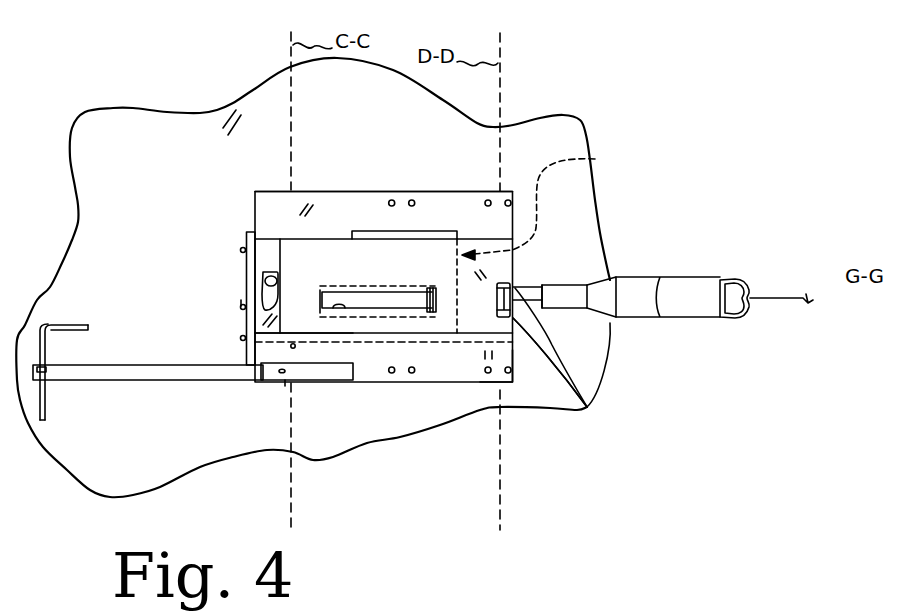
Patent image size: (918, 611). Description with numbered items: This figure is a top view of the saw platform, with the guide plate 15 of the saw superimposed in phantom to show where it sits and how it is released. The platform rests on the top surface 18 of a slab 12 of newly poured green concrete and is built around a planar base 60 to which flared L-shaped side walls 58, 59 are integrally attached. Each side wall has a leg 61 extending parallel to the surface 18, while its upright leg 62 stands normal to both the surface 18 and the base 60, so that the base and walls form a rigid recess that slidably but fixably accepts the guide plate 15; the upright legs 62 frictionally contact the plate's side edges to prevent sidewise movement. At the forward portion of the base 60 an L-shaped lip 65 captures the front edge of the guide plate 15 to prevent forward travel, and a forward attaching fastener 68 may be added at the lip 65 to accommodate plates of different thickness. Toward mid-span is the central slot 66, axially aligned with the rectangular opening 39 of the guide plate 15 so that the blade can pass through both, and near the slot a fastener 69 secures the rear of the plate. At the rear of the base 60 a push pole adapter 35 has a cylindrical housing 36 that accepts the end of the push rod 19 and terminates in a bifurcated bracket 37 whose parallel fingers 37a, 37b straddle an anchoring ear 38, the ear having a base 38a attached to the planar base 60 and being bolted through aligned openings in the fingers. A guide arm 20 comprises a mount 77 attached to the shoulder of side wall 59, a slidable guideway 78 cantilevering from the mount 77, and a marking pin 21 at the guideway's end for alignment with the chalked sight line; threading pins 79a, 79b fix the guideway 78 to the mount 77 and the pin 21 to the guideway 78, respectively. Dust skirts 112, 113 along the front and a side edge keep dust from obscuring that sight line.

The slab of green concrete 12 is at (113, 108).
The guide plate 15 is at (541, 203).
The top surface 18 is at (235, 120).
The push rod 19 is at (687, 293).
The guide arm 20 is at (259, 381).
The marking pin 21 is at (46, 350).
The push pole adapter 35 is at (560, 283).
The cylindrical housing 36 is at (623, 300).
The bifurcated bracket 37 is at (600, 383).
The finger 37a is at (565, 305).
The finger 37b is at (586, 405).
The anchoring ear 38 is at (497, 293).
The base of anchoring ear 38a is at (571, 276).
The rectangular opening 39 is at (408, 333).
The L-shaped side wall 58 is at (430, 190).
The L-shaped side wall 59 is at (507, 383).
The planar base 60 is at (485, 270).
The leg 61 is at (302, 207).
The upright leg 62 is at (298, 241).
The L-shaped lip 65 is at (267, 320).
The central slot 66 is at (340, 304).
The forward attaching fastener 68 is at (274, 293).
The fastener 69 is at (427, 288).
The mount 77 is at (307, 382).
The slidable guideway 78 is at (163, 372).
The threading pin 79a is at (287, 380).
The threading pin 79b is at (47, 372).
The dust skirt 112 is at (243, 303).
The dust skirt 113 is at (387, 345).